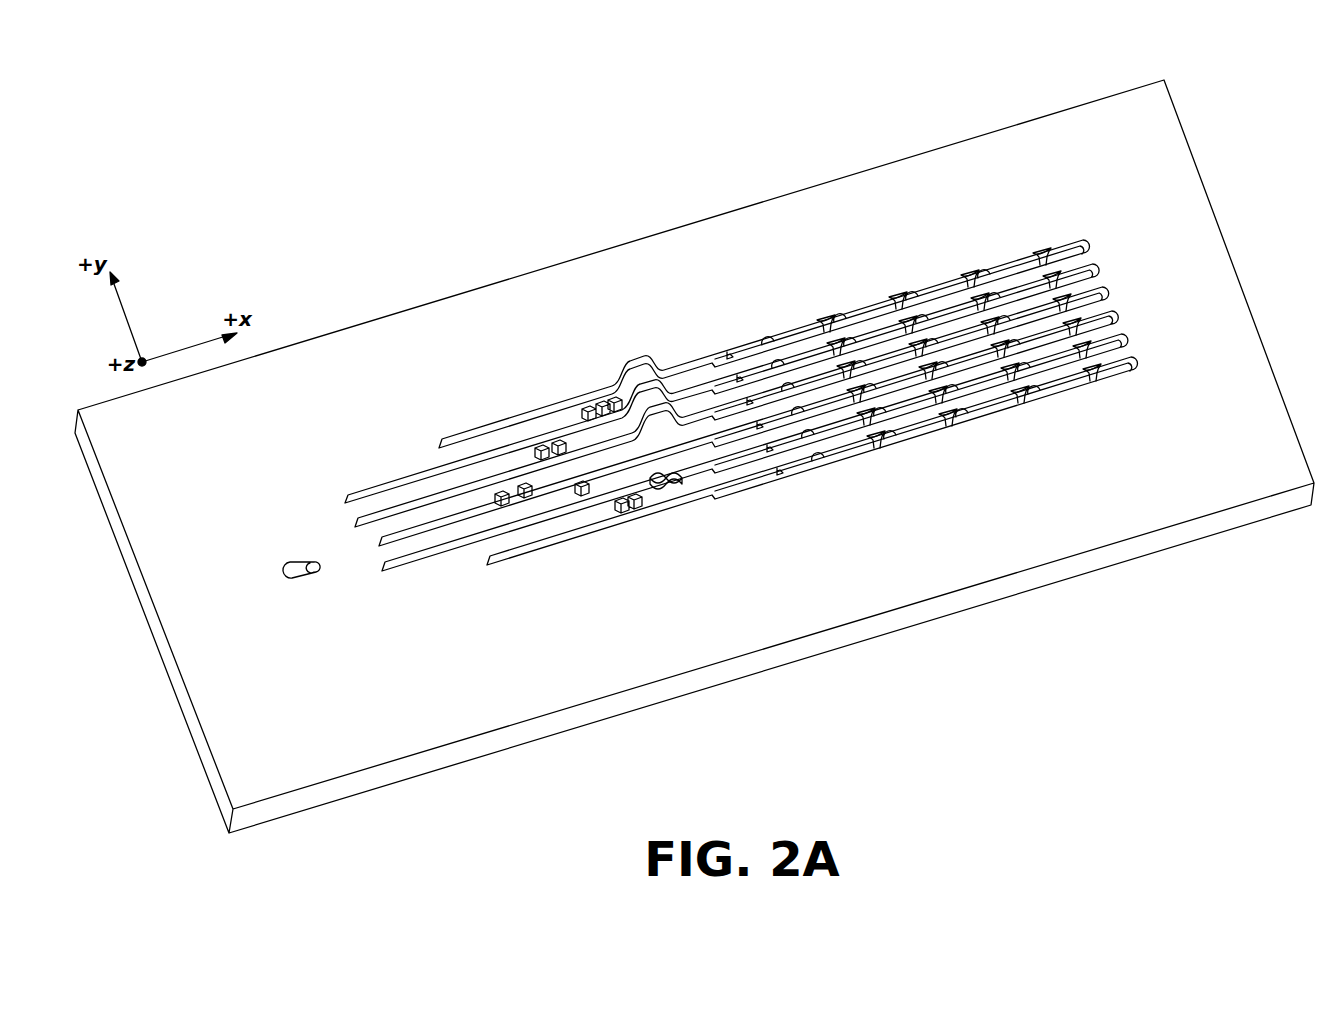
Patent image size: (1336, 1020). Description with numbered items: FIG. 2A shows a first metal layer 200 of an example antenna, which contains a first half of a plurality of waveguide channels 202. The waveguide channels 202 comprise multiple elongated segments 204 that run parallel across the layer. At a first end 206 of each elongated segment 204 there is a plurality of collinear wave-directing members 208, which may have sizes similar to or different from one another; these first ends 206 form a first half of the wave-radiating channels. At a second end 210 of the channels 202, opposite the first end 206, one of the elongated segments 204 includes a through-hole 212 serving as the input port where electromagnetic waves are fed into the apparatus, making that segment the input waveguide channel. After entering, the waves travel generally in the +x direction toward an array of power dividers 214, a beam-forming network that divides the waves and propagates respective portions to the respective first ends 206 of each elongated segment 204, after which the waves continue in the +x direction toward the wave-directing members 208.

The first metal layer 200 is at (750, 148).
The waveguide channels 202 is at (1104, 216).
The elongated segments 204 is at (497, 563).
The first end 206 is at (1083, 211).
The wave-directing members 208 is at (1093, 372).
The second end 210 is at (517, 589).
The through-hole 212 is at (297, 578).
The array of power dividers 214 is at (670, 345).